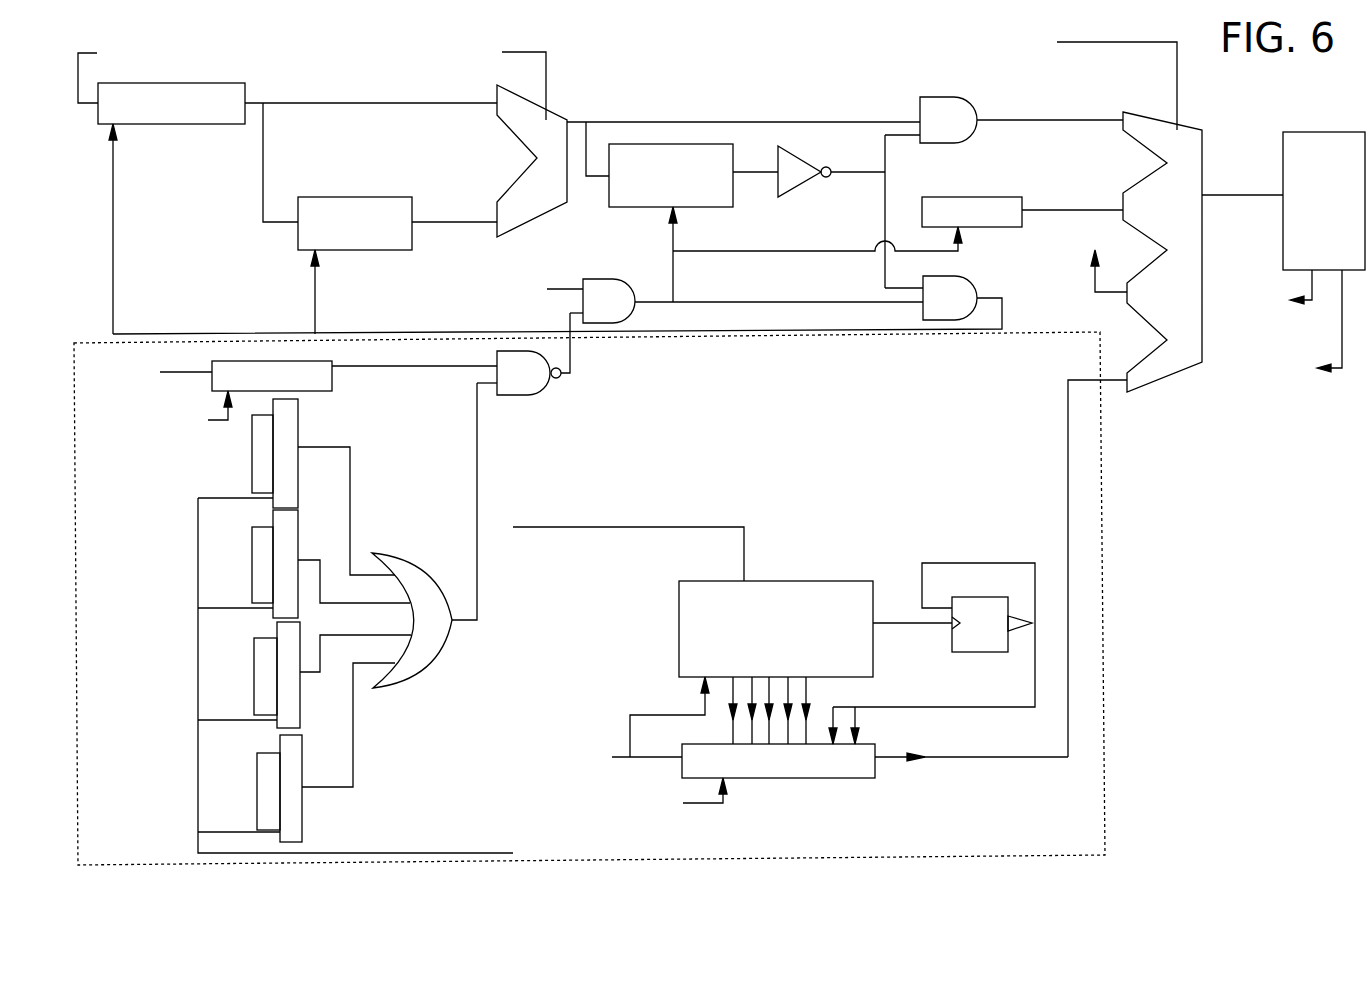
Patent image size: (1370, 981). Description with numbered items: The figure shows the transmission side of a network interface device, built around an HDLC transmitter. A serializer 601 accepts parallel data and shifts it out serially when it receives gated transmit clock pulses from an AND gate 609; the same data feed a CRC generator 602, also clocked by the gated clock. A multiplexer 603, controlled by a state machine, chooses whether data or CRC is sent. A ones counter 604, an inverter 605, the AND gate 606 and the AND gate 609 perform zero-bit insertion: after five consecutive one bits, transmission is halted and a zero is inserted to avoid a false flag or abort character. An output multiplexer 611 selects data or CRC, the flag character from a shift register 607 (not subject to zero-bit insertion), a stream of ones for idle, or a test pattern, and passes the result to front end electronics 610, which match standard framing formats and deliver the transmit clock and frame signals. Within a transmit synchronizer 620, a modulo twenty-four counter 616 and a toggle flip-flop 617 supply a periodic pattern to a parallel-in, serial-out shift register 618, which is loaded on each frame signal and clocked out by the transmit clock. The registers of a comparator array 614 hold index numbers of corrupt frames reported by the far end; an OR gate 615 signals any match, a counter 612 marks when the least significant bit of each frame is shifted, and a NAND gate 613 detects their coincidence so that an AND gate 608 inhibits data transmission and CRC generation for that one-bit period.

The serializer 601 is at (161, 188).
The CRC generator 602 is at (337, 218).
The multiplexer 603 is at (582, 146).
The ones counter 604 is at (682, 212).
The inverter 605 is at (831, 180).
The AND gate 606 is at (946, 160).
The shift register 607 is at (898, 213).
The AND gate 608 is at (673, 292).
The AND gate 609 is at (567, 302).
The front end electronics 610 is at (1283, 243).
The multiplexer 611 is at (1135, 434).
The counter 612 is at (289, 389).
The NAND gate 613 is at (511, 466).
The comparator array 614 is at (355, 626).
The OR gate 615 is at (412, 618).
The modulo 24 counter 616 is at (732, 642).
The toggle flip-flop 617 is at (932, 653).
The parallel-in, serial-out shift register 618 is at (803, 780).
The transmit synchronizer 620 is at (589, 598).